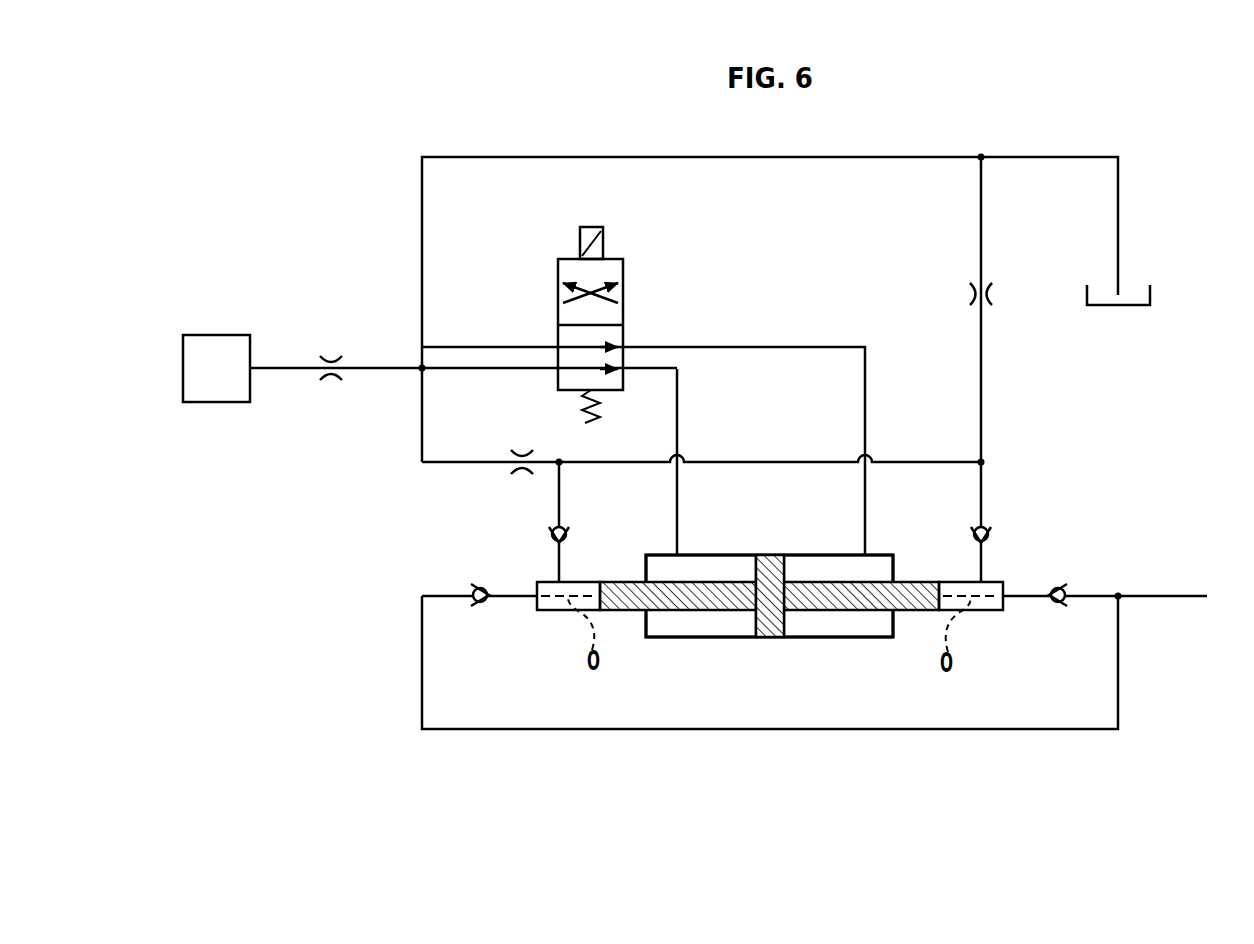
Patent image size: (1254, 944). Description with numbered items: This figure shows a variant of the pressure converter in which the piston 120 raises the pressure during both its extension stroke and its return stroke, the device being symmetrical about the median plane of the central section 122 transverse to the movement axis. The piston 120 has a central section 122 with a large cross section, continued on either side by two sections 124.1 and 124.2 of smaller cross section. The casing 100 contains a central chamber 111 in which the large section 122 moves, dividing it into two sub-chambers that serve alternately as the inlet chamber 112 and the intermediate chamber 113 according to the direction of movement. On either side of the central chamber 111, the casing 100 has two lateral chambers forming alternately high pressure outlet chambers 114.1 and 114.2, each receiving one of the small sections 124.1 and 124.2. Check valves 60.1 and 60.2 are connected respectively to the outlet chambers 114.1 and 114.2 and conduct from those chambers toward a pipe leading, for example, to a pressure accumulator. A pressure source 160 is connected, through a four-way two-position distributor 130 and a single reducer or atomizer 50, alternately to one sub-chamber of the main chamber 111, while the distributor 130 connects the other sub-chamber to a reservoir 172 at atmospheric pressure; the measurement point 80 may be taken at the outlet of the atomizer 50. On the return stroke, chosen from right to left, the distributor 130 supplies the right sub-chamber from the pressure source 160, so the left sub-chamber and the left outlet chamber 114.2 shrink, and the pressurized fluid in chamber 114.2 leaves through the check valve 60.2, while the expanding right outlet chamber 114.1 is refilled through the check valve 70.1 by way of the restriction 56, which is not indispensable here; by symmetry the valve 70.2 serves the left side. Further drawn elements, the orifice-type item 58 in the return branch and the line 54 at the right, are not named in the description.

The pressure source 160 is at (217, 322).
The measurement point 80 is at (422, 366).
The reducer or atomizer 50 is at (331, 354).
The four-way two-position distributor 130 is at (640, 322).
The orifice 58 is at (970, 296).
The reservoir 172 is at (1150, 293).
The restriction 56 is at (522, 448).
The check valve 70.2 is at (550, 542).
The check valve 70.1 is at (990, 542).
The casing 100 is at (814, 555).
The piston 120 is at (725, 636).
The central chamber 111 is at (747, 652).
The inlet chamber 112 is at (687, 623).
The intermediate chamber 113 is at (853, 623).
The section with a smaller cross section 124.2 is at (628, 596).
The section with a smaller cross section 124.1 is at (912, 596).
The central section with a large cross section 122 is at (768, 565).
The left outlet chamber 114.2 is at (548, 604).
The right outlet chamber 114.1 is at (985, 604).
The check valve 60.2 is at (483, 604).
The check valve 60.1 is at (1055, 604).
The supply line 54 is at (1160, 596).